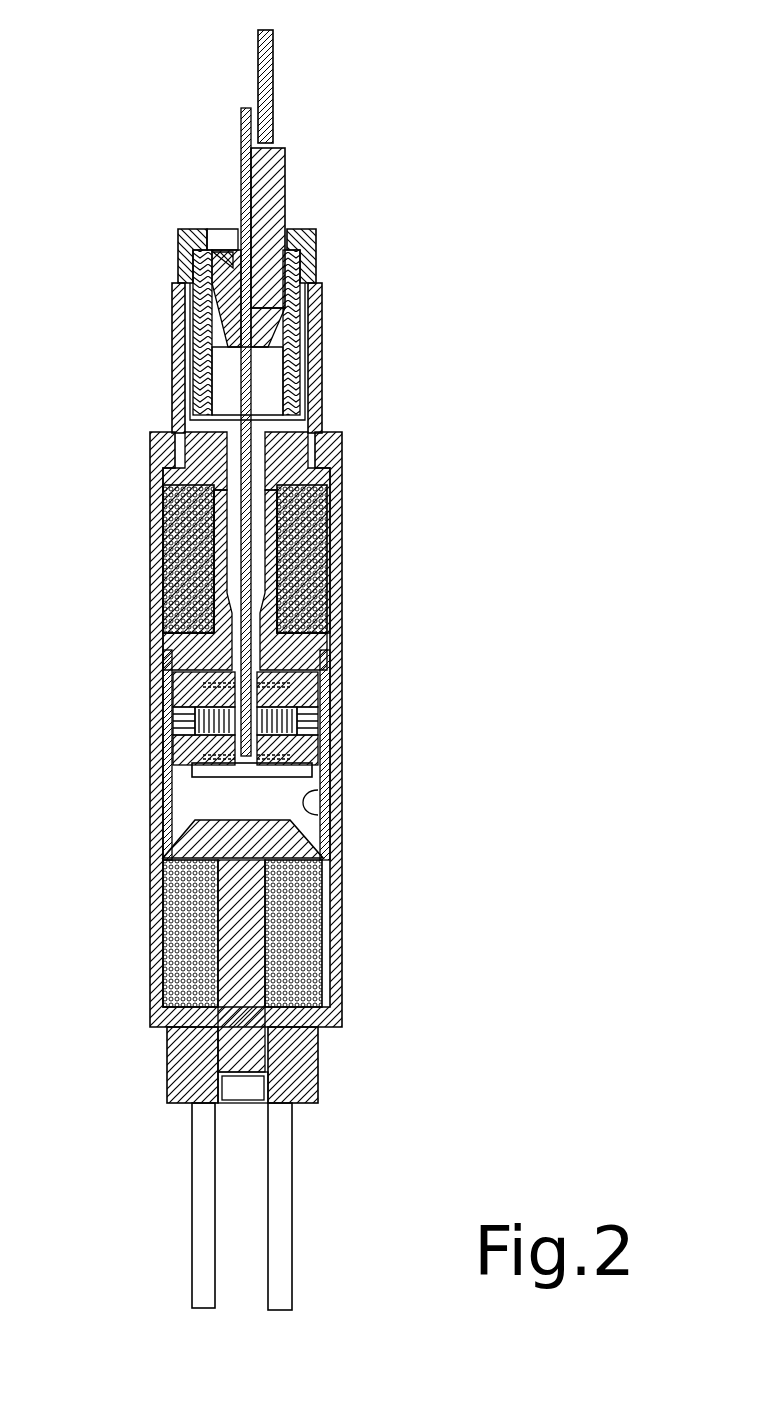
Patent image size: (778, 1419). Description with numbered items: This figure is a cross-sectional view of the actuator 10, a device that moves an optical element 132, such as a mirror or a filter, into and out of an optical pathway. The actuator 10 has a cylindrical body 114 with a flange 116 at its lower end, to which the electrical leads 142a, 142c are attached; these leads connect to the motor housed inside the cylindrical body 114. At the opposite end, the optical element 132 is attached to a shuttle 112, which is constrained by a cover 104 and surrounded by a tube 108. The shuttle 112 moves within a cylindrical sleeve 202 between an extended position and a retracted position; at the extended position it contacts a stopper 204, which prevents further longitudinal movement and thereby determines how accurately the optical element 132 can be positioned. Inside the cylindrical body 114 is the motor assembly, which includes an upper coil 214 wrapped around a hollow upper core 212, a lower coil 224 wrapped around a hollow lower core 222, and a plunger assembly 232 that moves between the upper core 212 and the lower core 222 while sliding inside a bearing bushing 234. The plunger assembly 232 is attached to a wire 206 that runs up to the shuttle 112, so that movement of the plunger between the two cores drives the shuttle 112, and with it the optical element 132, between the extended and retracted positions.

The actuator 10 is at (437, 229).
The cover 104 is at (178, 237).
The tube 108 is at (172, 403).
The shuttle 112 is at (285, 180).
The cylindrical body 114 is at (342, 540).
The flange 116 is at (318, 1068).
The optical element 132 is at (273, 62).
The electrical lead 142a is at (192, 1178).
The electrical lead 142c is at (292, 1172).
The cylindrical sleeve 202 is at (193, 332).
The stopper 204 is at (233, 251).
The wire 206 is at (168, 522).
The upper core 212 is at (170, 672).
The upper coil 214 is at (163, 586).
The lower core 222 is at (163, 848).
The lower coil 224 is at (163, 965).
The plunger assembly 232 is at (192, 778).
The bearing bushing 234 is at (318, 812).